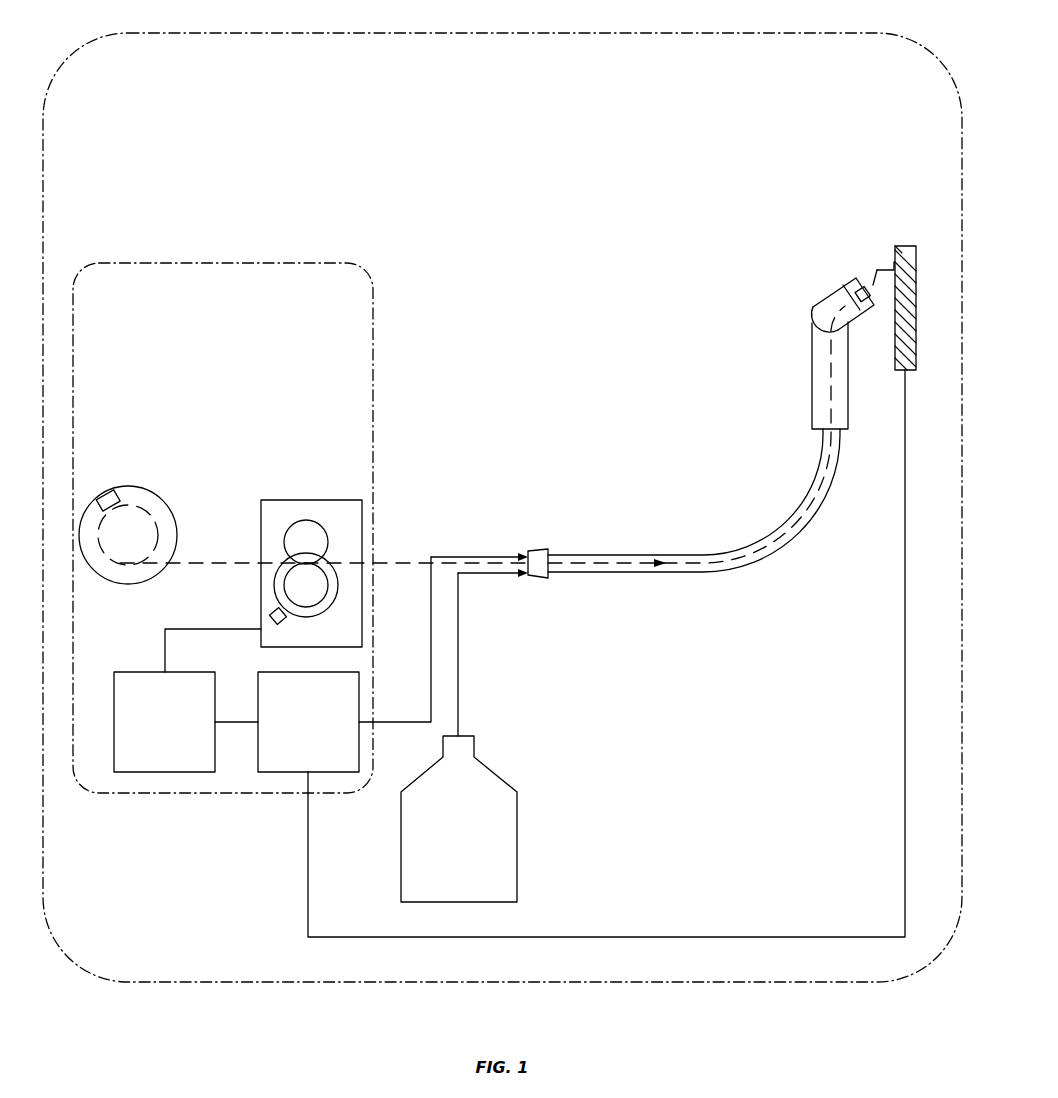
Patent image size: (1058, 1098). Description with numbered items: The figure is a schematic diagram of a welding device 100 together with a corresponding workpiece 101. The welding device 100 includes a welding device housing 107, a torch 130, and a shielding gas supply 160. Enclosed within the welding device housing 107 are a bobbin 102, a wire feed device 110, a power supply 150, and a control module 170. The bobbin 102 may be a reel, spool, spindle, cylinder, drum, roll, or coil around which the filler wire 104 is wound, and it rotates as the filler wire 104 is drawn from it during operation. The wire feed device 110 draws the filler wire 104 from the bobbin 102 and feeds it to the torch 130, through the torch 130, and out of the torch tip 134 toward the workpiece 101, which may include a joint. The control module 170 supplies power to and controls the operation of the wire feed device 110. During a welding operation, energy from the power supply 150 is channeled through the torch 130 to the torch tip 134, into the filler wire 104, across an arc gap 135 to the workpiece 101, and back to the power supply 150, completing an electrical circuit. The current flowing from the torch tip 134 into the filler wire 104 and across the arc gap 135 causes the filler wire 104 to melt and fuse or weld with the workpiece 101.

The welding device 100 is at (502, 498).
The workpiece 101 is at (905, 235).
The bobbin 102 is at (128, 480).
The filler wire 104 is at (383, 555).
The welding device housing 107 is at (223, 519).
The wire feed device 110 is at (312, 490).
The torch 130 is at (521, 202).
The torch tip 134 is at (853, 270).
The arc gap 135 is at (883, 262).
The power supply 150 is at (581, 653).
The shielding gas supply 160 is at (459, 737).
The control module 170 is at (187, 700).